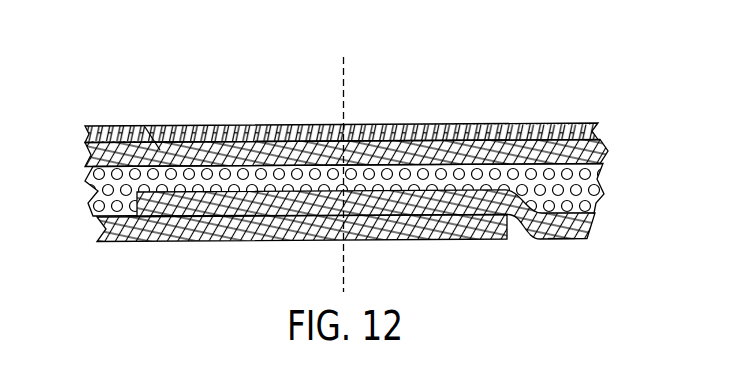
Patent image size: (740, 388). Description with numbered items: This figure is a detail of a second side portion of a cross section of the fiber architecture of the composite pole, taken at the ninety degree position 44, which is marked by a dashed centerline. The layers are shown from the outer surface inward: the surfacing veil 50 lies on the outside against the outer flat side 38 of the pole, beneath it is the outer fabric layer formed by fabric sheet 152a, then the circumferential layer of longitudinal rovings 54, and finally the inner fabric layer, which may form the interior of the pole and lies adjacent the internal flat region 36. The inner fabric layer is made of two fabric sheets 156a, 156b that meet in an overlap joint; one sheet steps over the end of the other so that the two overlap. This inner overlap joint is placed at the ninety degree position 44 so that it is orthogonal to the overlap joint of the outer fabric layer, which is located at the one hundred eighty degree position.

The flat region 36 is at (452, 240).
The flat side 38 is at (413, 125).
The 90° position 44 is at (342, 103).
The surfacing veil 50 is at (250, 131).
The circumferential layer of longitudinal rovings 54 is at (277, 240).
The fabric sheet 152a is at (154, 151).
The fabric sheet 156a is at (160, 218).
The fabric sheet 156b is at (558, 220).